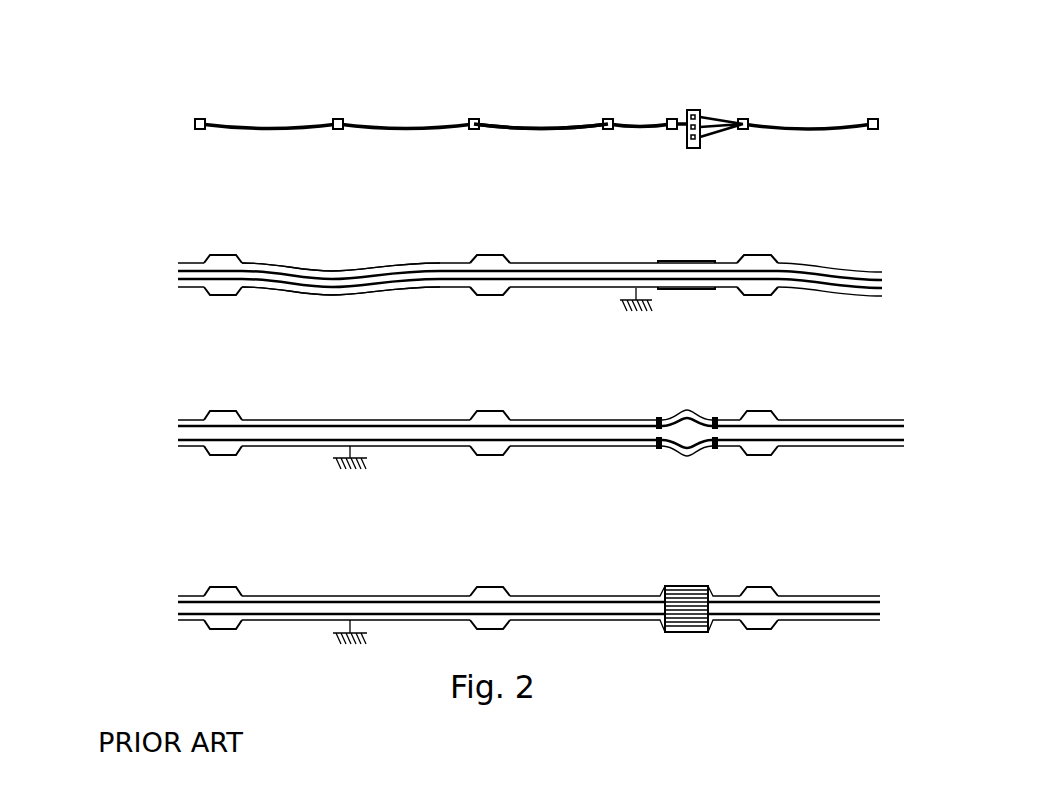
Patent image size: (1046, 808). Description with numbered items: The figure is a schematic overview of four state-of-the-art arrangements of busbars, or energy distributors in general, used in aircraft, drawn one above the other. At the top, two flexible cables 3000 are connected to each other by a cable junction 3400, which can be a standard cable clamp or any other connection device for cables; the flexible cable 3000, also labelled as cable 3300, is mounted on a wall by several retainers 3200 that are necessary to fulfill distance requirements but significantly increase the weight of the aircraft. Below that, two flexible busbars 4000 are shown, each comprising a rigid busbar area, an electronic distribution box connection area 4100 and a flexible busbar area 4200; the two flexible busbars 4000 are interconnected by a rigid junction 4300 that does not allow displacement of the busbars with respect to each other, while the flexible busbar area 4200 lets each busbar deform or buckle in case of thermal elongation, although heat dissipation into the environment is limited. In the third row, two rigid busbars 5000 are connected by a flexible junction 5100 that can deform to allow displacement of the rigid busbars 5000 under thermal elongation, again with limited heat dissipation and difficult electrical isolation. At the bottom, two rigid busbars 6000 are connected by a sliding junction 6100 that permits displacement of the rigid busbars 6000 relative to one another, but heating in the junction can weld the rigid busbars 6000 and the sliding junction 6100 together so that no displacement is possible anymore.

The flexible cable 3000 is at (182, 124).
The retainers 3200 is at (467, 108).
The cable 3300 is at (559, 108).
The cable junction 3400 is at (709, 94).
The flexible busbar 4000 is at (179, 273).
The electronic distribution box connection area 4100 is at (500, 244).
The flexible busbar area 4200 is at (335, 255).
The rigid junction 4300 is at (690, 252).
The rigid busbar with flexible junction 5000 is at (177, 433).
The flexible junction 5100 is at (695, 391).
The rigid busbar with sliding junction 6000 is at (177, 608).
The sliding junction 6100 is at (684, 574).